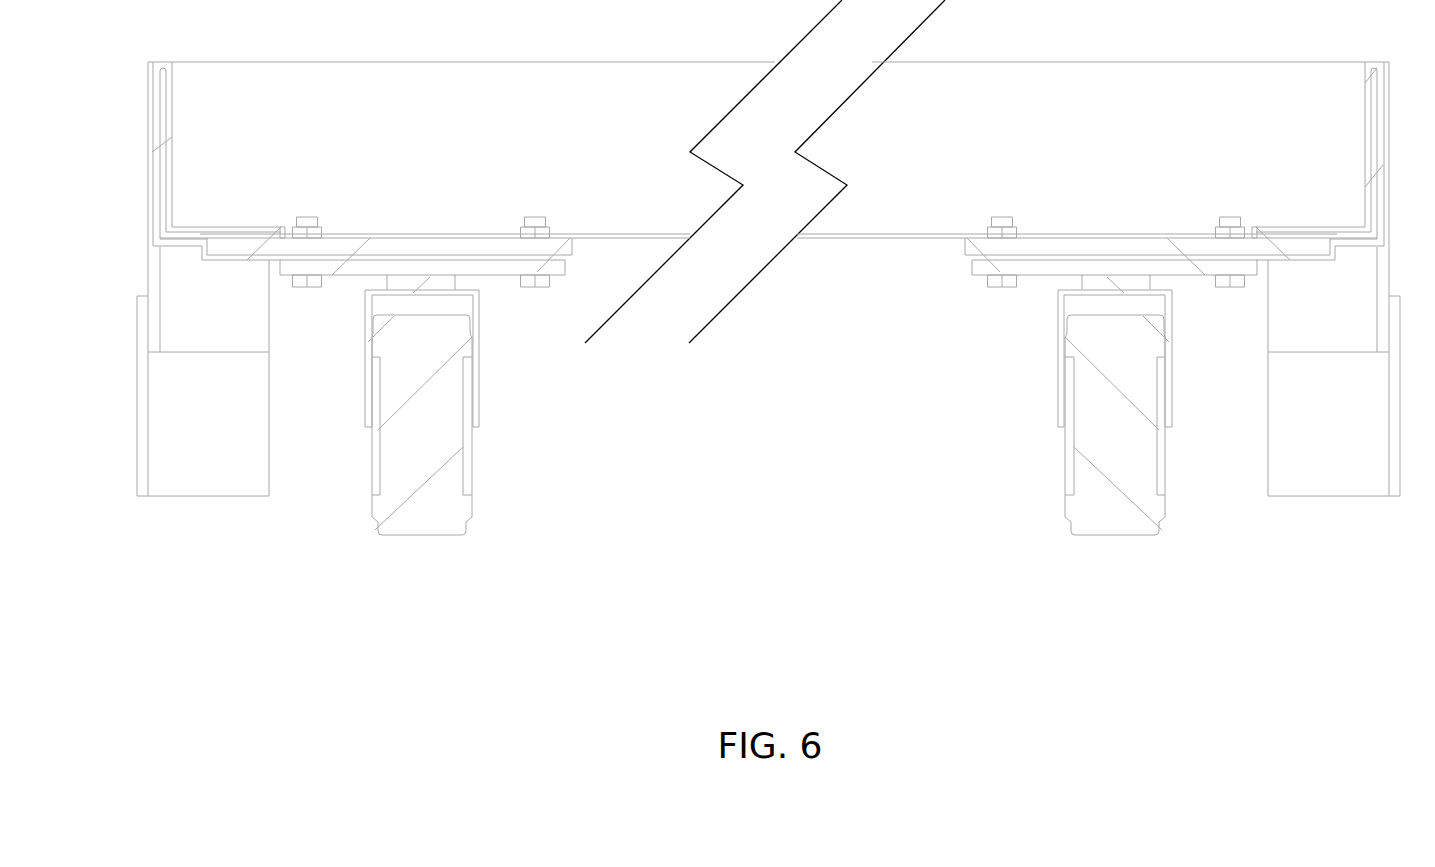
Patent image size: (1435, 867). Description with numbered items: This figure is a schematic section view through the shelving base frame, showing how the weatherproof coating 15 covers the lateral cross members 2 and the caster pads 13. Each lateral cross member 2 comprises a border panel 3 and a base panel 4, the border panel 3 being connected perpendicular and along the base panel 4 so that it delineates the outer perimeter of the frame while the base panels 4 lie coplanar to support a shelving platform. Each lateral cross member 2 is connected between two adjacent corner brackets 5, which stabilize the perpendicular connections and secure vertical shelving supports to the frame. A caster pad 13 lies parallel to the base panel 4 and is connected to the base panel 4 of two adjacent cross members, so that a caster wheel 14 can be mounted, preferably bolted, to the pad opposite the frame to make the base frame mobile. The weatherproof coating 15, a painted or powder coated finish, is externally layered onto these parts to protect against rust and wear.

The lateral cross member 2 is at (529, 55).
The border panel 3 is at (388, 67).
The base panel 4 is at (202, 237).
The corner bracket 5 is at (237, 489).
The caster pad 13 is at (386, 242).
The caster wheel 14 is at (468, 503).
The weatherproof coating 15 is at (168, 170).